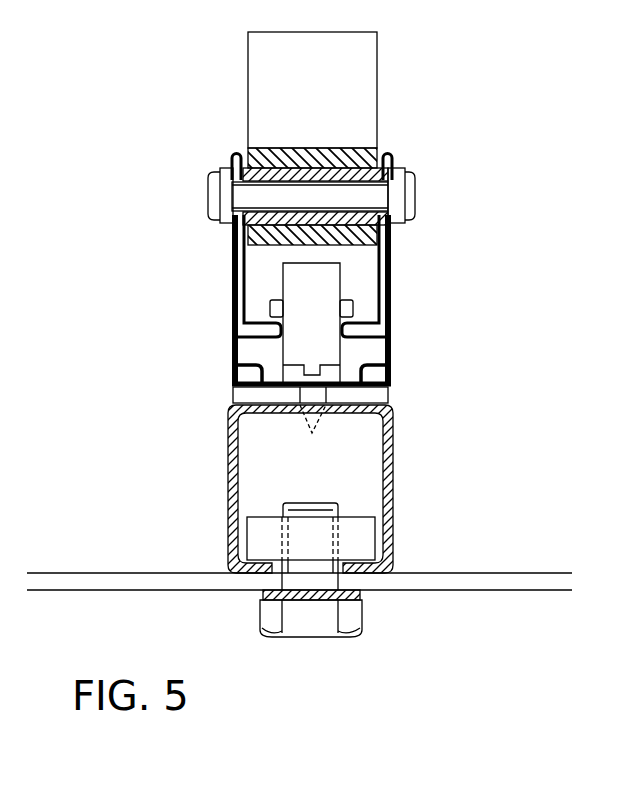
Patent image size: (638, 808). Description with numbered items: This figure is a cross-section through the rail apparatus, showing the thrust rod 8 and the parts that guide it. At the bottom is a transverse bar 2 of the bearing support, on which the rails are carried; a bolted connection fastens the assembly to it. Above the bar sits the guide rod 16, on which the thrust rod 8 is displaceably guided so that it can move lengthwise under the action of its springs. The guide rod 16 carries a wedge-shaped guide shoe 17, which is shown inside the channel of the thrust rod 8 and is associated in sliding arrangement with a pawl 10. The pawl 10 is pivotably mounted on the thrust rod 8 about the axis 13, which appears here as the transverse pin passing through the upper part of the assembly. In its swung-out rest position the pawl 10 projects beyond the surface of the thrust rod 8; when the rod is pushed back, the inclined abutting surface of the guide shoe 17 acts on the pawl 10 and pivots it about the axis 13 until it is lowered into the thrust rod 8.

The pawl 10 is at (353, 57).
The axis 13 is at (380, 193).
The thrust rod 8 is at (393, 297).
The guide shoe 17 is at (323, 335).
The guide rod 16 is at (385, 488).
The transverse bar 2 is at (407, 582).